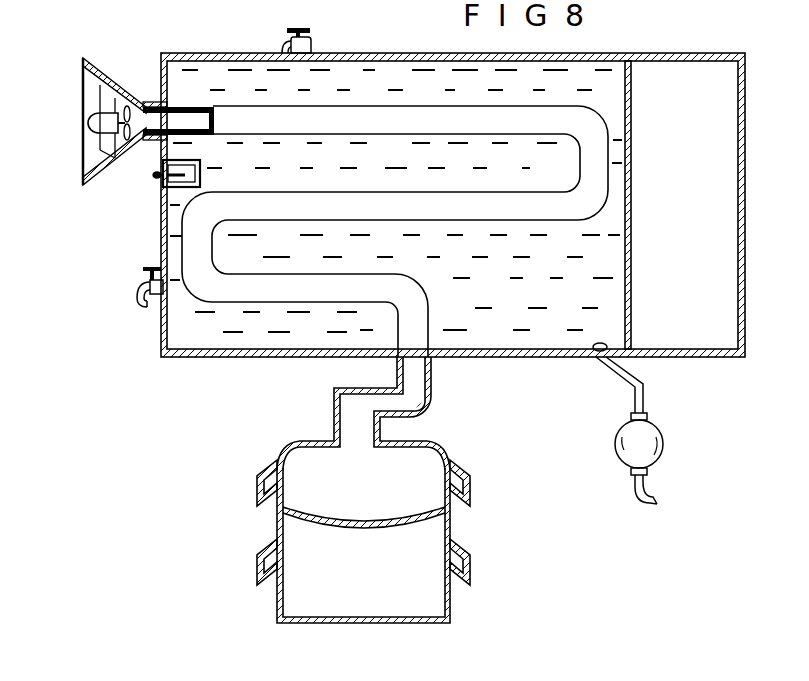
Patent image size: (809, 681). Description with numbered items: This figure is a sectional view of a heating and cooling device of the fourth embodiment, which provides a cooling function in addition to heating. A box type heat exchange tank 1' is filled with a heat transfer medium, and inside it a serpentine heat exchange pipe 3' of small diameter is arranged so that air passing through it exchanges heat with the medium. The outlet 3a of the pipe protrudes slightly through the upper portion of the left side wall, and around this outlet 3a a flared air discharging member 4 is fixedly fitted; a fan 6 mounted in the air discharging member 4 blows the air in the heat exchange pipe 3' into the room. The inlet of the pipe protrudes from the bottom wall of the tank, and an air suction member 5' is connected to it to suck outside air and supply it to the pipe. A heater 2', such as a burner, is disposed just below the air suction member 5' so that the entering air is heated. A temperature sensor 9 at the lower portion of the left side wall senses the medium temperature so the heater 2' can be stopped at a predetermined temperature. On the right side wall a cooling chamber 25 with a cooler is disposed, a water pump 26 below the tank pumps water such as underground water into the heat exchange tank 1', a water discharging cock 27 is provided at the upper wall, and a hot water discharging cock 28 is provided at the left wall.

The heat exchange tank 1' is at (453, 178).
The heater 2' is at (335, 541).
The heat exchange pipe 3' is at (488, 231).
The outlet 3a is at (163, 110).
The air discharging member 4 is at (88, 77).
The air suction member 5' is at (338, 490).
The fan 6 is at (90, 123).
The temperature sensor 9 is at (157, 177).
The cooling chamber 25 is at (688, 52).
The water pump 26 is at (662, 438).
The water discharging cock 27 is at (311, 43).
The hot water discharging cock 28 is at (148, 296).